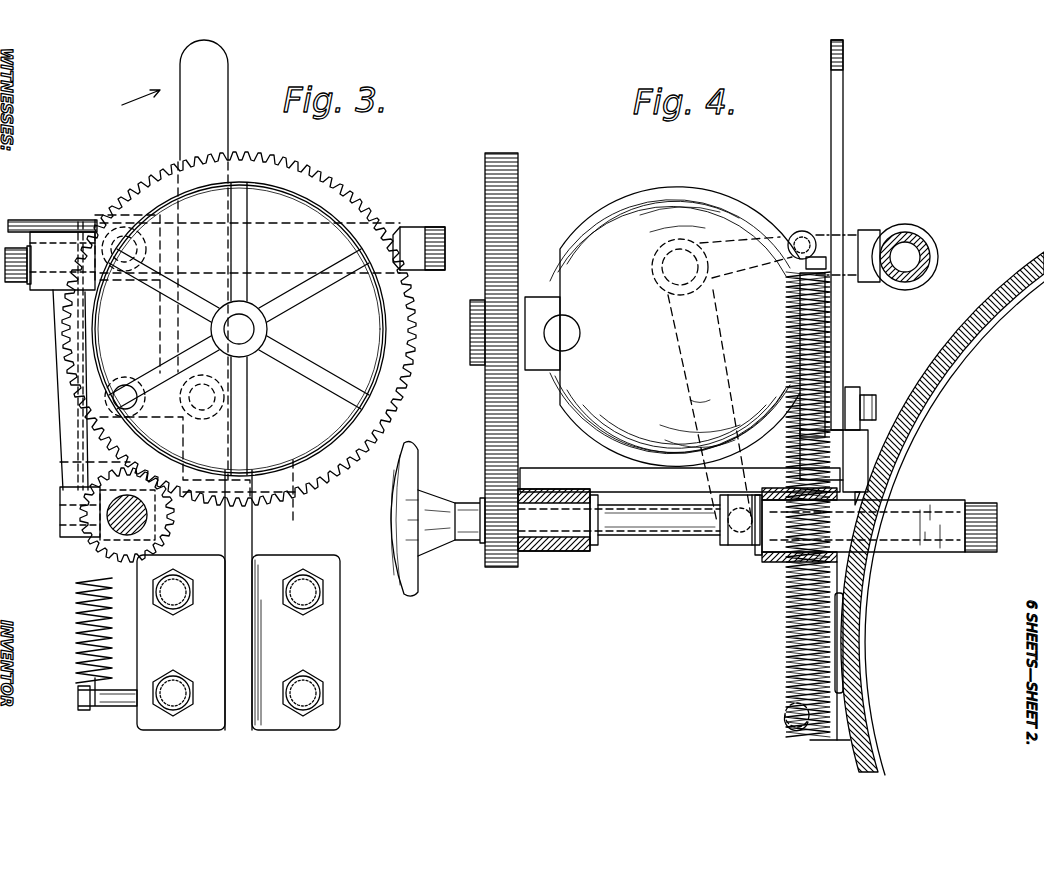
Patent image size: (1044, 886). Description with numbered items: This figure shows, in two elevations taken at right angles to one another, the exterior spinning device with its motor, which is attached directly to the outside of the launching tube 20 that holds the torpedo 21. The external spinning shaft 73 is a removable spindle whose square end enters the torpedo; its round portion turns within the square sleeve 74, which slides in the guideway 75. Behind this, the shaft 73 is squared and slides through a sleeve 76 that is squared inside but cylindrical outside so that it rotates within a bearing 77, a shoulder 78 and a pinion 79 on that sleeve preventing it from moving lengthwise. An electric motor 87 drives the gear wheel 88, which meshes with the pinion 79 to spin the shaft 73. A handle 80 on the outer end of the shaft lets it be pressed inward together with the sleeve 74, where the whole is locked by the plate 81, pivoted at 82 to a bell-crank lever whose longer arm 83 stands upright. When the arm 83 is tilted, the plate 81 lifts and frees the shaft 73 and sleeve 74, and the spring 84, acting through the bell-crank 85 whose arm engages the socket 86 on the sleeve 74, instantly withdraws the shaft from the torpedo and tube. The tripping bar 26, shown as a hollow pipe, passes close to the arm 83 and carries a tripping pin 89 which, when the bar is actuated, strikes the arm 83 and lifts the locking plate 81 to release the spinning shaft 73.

In FIG. 4, the launching tube 20 is at (863, 672).
In FIG. 4, the torpedo 21 is at (870, 707).
In FIG. 3, the tripping bar 26 is at (50, 222).
In FIG. 4, the tripping bar 26 is at (930, 248).
In FIG. 4, the external spinning shaft 73 is at (703, 536).
In FIG. 4, the square sleeve 74 is at (921, 552).
In FIG. 4, the guideway 75 is at (778, 562).
In FIG. 4, the sleeve 76 is at (560, 525).
In FIG. 4, the bearing 77 is at (582, 553).
In FIG. 4, the shoulder 78 is at (598, 546).
In FIG. 3, the pinion 79 is at (167, 530).
In FIG. 4, the pinion 79 is at (488, 563).
In FIG. 4, the handle 80 is at (416, 484).
In FIG. 3, the locking plate 81 is at (108, 450).
In FIG. 4, the locking plate 81 is at (855, 490).
In FIG. 3, the pivot 82 is at (125, 385).
In FIG. 4, the pivot 82 is at (863, 398).
In FIG. 3, the arm 83 is at (215, 385).
In FIG. 4, the arm 83 is at (837, 202).
In FIG. 3, the spring 84 is at (84, 580).
In FIG. 4, the spring 84 is at (620, 490).
In FIG. 3, the bell-crank 85 is at (62, 412).
In FIG. 4, the bell-crank 85 is at (747, 240).
In FIG. 4, the socket 86 is at (757, 552).
In FIG. 3, the electric motor 87 is at (300, 404).
In FIG. 4, the electric motor 87 is at (680, 339).
In FIG. 3, the gear wheel 88 is at (408, 328).
In FIG. 4, the gear wheel 88 is at (518, 224).
In FIG. 4, the tripping pin 89 is at (852, 238).